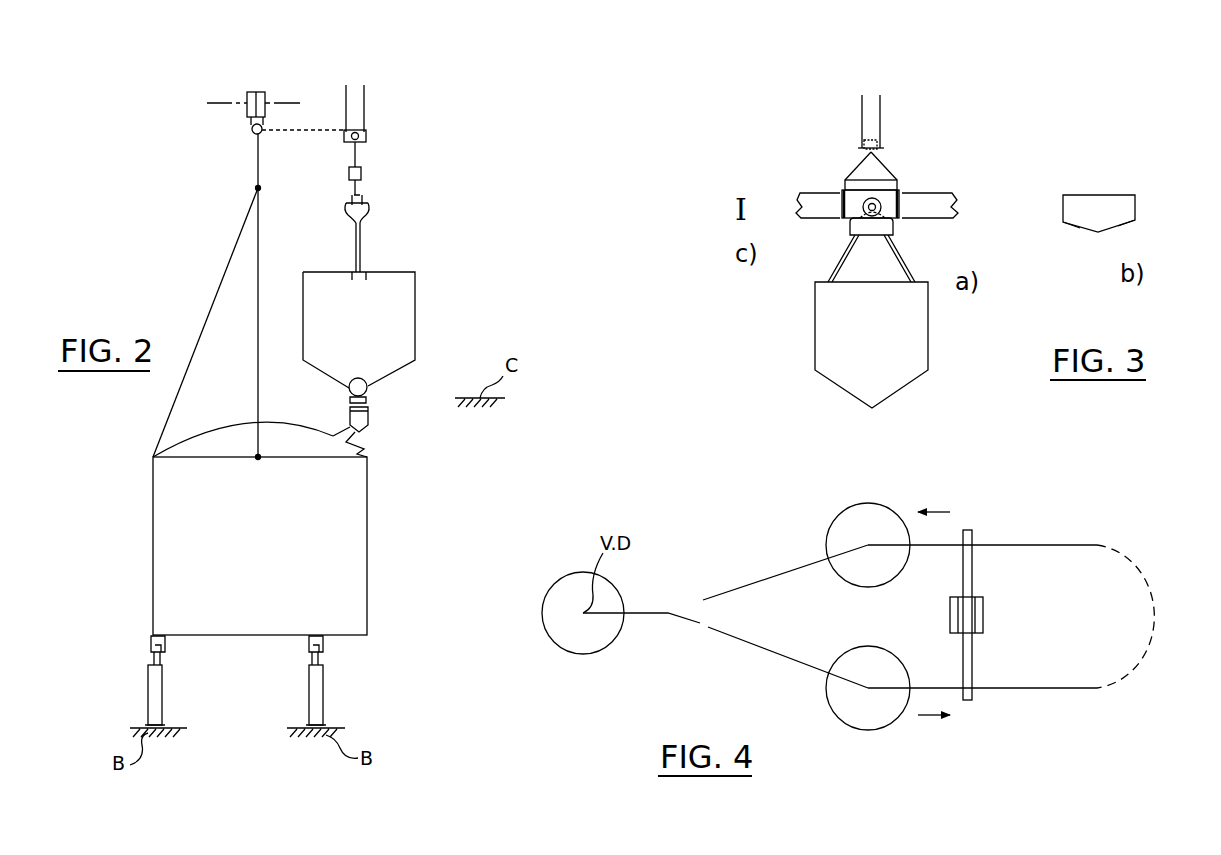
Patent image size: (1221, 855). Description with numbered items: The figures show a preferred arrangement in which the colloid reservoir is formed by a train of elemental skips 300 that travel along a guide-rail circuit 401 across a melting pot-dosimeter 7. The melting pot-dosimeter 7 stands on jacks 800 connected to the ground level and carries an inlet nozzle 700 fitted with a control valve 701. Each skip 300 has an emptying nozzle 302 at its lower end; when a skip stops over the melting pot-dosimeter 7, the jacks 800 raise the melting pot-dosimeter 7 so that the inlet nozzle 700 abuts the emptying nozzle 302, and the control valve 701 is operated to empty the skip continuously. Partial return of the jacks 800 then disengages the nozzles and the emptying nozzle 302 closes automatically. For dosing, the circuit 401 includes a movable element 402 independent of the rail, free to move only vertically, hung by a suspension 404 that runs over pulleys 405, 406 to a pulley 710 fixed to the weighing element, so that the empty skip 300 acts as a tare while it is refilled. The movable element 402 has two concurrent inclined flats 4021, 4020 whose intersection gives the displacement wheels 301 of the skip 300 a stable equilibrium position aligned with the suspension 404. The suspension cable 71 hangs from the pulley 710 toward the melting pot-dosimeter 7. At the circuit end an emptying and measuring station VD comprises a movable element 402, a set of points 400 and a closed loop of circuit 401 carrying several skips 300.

In FIG. 2, the melting pot-dosimeter 7 is at (342, 541).
In FIG. 2, the suspension cable 71 is at (258, 287).
In FIG. 2, the skip 300 is at (398, 315).
In FIG. 3, the skip 300 is at (928, 356).
In FIG. 4, the skip 300 is at (600, 652).
In FIG. 2, the displacement wheels 301 is at (370, 201).
In FIG. 3, the displacement wheels 301 is at (864, 209).
In FIG. 2, the emptying nozzle 302 is at (368, 388).
In FIG. 4, the set of points 400 is at (683, 605).
In FIG. 2, the circuit 401 is at (363, 180).
In FIG. 3, the circuit 401 is at (925, 200).
In FIG. 4, the circuit 401 is at (1013, 688).
In FIG. 2, the movable element 402 is at (362, 167).
In FIG. 3, the movable element 402 is at (854, 196).
In FIG. 2, the suspension 404 is at (288, 133).
In FIG. 3, the suspension 404 is at (882, 170).
In FIG. 2, the pulley 405 is at (366, 130).
In FIG. 3, the pulley 405 is at (878, 148).
In FIG. 2, the pulley 406 is at (263, 128).
In FIG. 3, the inclined flat 4020 is at (1125, 226).
In FIG. 3, the inclined flat 4021 is at (1070, 226).
In FIG. 2, the inlet nozzle 700 is at (370, 422).
In FIG. 2, the control valve 701 is at (364, 450).
In FIG. 2, the pulley 710 is at (245, 112).
In FIG. 2, the jacks 800 is at (158, 685).